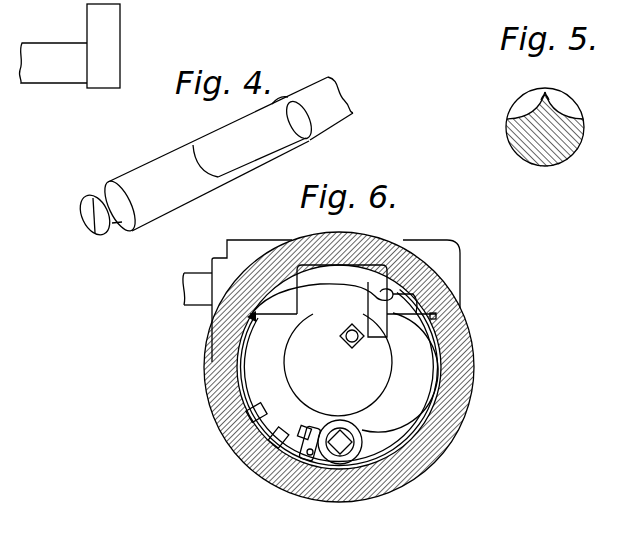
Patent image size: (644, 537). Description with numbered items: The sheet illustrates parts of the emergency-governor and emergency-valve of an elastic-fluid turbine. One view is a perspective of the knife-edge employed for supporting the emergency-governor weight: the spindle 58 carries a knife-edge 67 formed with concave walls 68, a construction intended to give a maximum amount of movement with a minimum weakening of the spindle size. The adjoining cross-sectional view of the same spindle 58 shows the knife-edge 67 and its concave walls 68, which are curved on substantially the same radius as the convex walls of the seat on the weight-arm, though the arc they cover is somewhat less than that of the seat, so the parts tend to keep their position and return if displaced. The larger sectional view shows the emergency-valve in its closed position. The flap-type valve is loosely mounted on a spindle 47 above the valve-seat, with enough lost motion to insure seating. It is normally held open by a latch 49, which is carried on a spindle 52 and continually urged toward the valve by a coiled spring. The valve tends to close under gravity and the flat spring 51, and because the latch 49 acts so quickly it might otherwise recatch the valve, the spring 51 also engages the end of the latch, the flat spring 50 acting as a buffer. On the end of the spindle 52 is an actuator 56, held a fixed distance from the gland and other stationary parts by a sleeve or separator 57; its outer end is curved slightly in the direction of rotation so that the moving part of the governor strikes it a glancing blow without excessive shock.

In FIG. 6, the spindle 47 is at (192, 306).
In FIG. 6, the latch 49 is at (428, 367).
In FIG. 6, the flat spring 50 is at (427, 410).
In FIG. 6, the flat spring 51 is at (212, 362).
In FIG. 6, the spindle 52 is at (338, 465).
In FIG. 4, the actuator 56 is at (117, 23).
In FIG. 4, the sleeve or separator 57 is at (58, 84).
In FIG. 4, the spindle 58 is at (140, 172).
In FIG. 5, the spindle 58 is at (549, 166).
In FIG. 4, the knife-edge 67 is at (213, 139).
In FIG. 5, the knife-edge 67 is at (548, 94).
In FIG. 5, the concave walls 68 is at (530, 115).